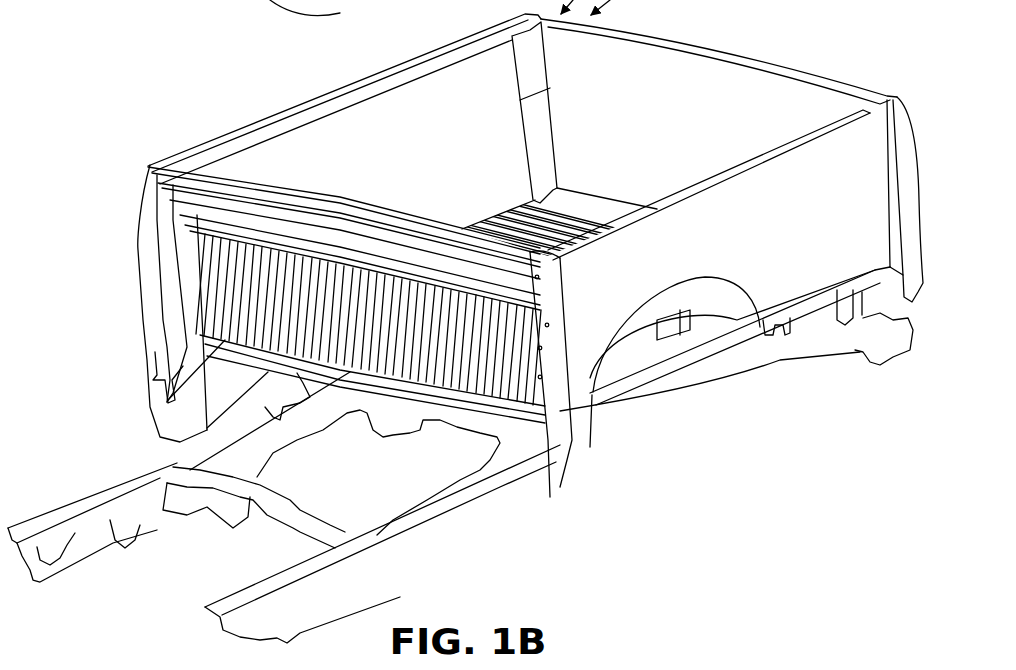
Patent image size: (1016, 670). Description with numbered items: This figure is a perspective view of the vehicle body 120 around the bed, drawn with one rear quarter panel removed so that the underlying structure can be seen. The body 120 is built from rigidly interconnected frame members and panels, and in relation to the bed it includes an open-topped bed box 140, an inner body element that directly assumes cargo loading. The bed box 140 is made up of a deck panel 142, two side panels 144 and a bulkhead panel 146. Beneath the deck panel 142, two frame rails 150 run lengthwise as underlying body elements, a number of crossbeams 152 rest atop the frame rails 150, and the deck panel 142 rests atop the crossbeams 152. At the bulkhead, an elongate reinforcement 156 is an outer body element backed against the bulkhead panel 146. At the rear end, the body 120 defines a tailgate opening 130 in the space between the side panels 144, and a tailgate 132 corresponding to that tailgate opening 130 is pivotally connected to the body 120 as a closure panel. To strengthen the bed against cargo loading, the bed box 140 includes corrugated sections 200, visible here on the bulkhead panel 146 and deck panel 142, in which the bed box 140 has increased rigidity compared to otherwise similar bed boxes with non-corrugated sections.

The body 120 is at (621, 21).
The tailgate opening 130 is at (707, 78).
The tailgate 132 is at (800, 66).
The bed box 140 is at (550, 88).
The deck panel 142 is at (518, 197).
The side panels 144 is at (682, 188).
The bulkhead panel 146 is at (215, 280).
The frame rails 150 is at (588, 420).
The crossbeams 152 is at (594, 400).
The elongate reinforcement 156 is at (140, 203).
The corrugated sections 200 is at (220, 284).